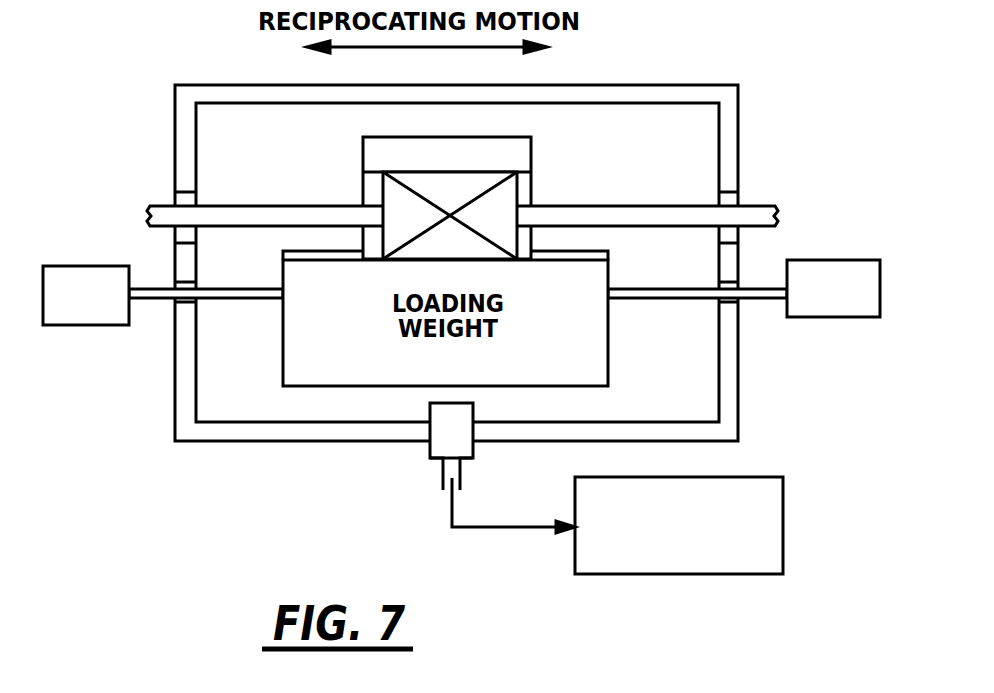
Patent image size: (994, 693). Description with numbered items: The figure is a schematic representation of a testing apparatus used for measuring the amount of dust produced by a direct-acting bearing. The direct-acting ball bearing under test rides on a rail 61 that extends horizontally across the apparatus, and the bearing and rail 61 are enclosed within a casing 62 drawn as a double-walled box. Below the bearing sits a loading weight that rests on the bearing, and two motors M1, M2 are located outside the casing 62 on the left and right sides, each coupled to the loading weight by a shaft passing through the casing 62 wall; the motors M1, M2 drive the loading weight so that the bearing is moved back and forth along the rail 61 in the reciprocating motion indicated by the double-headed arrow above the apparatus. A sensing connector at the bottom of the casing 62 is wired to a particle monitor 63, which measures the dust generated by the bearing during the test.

The rail 61 is at (257, 215).
The casing 62 is at (733, 119).
The particle monitor 63 is at (783, 520).
The motor M1 is at (93, 267).
The motor M2 is at (862, 260).